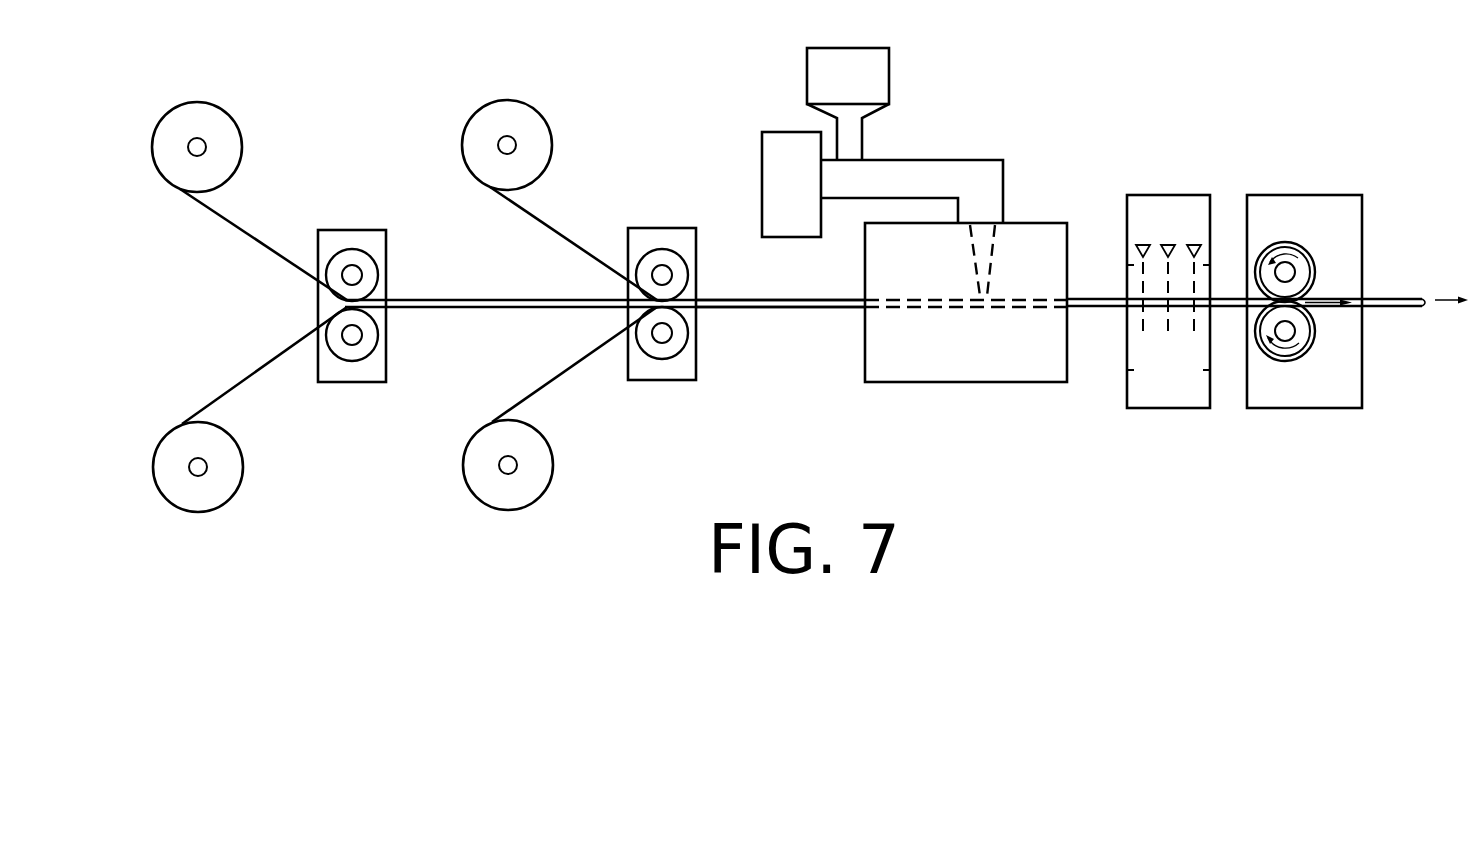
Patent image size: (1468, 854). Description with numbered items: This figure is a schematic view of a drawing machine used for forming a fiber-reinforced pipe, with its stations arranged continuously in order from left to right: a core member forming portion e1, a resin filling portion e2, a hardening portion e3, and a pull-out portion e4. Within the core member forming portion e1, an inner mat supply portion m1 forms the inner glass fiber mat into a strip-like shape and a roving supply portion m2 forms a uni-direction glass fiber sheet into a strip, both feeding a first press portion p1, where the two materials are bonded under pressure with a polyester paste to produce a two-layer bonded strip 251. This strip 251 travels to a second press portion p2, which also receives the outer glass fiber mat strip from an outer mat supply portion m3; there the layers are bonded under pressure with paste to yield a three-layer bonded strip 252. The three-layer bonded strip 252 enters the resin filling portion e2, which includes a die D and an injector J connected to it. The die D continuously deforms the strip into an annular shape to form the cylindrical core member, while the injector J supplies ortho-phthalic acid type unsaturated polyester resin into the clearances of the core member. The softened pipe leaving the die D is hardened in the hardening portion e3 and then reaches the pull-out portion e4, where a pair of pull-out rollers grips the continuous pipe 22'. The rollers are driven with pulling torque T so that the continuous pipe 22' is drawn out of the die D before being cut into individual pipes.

The inner mat supply portion m1 is at (230, 487).
The roving supply portion m2 is at (225, 123).
The outer mat supply portion m3 is at (522, 114).
The first press portion p1 is at (363, 383).
The second press portion p2 is at (660, 381).
The core member forming portion e1 is at (621, 150).
The resin filling portion e2 is at (966, 266).
The hardening portion e3 is at (1174, 148).
The pull-out portion e4 is at (1304, 266).
The injector J is at (922, 148).
The die D is at (972, 316).
The pulling torque T is at (1285, 256).
The two-layer bonded strip 251 is at (493, 311).
The three-layer bonded strip 252 is at (787, 311).
The continuous pipe 22' is at (1267, 335).